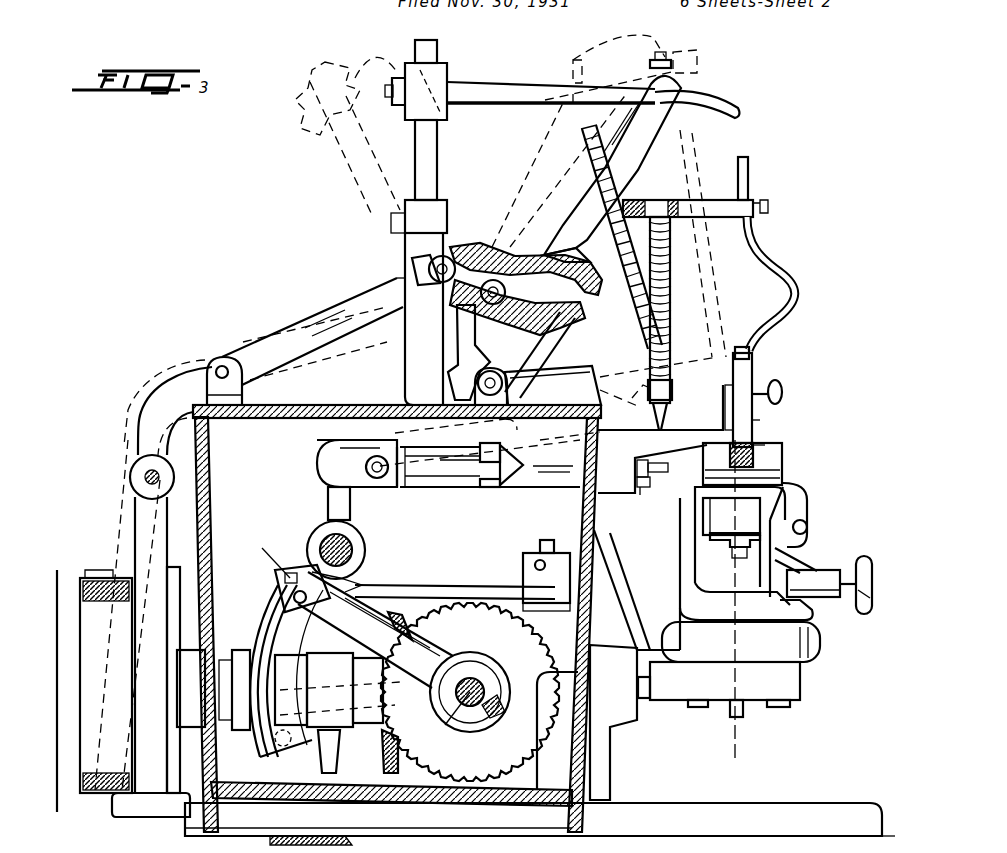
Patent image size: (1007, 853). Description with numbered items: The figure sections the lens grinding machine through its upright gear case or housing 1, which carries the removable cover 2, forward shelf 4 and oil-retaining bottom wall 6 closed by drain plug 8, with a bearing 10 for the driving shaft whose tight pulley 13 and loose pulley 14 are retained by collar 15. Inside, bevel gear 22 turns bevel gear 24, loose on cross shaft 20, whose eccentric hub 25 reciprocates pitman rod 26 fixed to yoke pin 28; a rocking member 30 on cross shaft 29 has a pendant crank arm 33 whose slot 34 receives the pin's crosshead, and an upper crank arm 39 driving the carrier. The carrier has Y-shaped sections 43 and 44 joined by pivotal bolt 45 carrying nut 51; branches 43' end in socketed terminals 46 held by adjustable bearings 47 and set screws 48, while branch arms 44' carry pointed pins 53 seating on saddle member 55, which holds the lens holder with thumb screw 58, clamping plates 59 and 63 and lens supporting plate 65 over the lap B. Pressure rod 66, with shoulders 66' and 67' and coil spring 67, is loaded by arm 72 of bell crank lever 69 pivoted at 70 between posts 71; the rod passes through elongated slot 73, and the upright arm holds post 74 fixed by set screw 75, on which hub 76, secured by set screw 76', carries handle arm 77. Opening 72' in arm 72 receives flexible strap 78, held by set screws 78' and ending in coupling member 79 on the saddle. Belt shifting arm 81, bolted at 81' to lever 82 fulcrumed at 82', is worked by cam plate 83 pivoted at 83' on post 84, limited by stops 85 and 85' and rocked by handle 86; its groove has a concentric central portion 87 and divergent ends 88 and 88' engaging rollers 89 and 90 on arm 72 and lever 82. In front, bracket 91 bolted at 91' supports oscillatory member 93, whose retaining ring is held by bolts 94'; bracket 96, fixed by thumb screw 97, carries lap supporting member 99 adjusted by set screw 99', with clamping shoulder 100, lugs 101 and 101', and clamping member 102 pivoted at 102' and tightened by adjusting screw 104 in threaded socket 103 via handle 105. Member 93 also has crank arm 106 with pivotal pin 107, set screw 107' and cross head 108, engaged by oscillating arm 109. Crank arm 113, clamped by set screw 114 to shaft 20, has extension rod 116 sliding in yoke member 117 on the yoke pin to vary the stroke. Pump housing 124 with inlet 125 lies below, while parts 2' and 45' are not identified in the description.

The gear case or housing 1 is at (197, 523).
The top or cover 2 is at (397, 400).
The lug 2' is at (235, 393).
The shelf 4 is at (780, 812).
The bottom wall 6 is at (515, 806).
The plug 8 is at (550, 695).
The bushing or bearing 10 is at (660, 427).
The tight pulley 13 is at (752, 335).
The loose pulley 14 is at (90, 570).
The collar 15 is at (75, 668).
The cross shaft 20 is at (446, 716).
The bevel gear 22 is at (383, 748).
The bevel gear 24 is at (492, 627).
The hub 25 is at (503, 668).
The pitman rod or bar 26 is at (335, 618).
The yoke pin 28 is at (294, 596).
The cross shaft 29 is at (352, 548).
The rocking member 30 is at (312, 540).
The pendant crank arm 33 is at (283, 618).
The slot 34 is at (265, 640).
The crank arm 39 is at (350, 511).
The Y-shaped section 43 is at (490, 480).
The branches 43' is at (460, 483).
The Y-shaped section 44 is at (652, 469).
The branch arms 44' is at (665, 471).
The pivotal bolt 45 is at (655, 487).
The stop 45' is at (642, 502).
The socketed terminal 46 is at (326, 449).
The adjustable bearing 47 is at (412, 482).
The set screw 48 is at (385, 478).
The nut 51 is at (462, 455).
The pointed pin 53 is at (780, 449).
The saddle member 55 is at (752, 375).
The thumb screw 58 is at (782, 393).
The clamping plate 59 is at (752, 424).
The clamping plate 63 is at (733, 400).
The lens supporting plate 65 is at (766, 460).
The pressure rod 66 is at (670, 323).
The shoulder 66' is at (676, 52).
The coil spring 67 is at (637, 237).
The shoulder 67' is at (633, 391).
The bell crank lever 69 is at (449, 259).
The pivot 70 is at (405, 295).
The upright posts 71 is at (405, 379).
The arm 72 is at (688, 197).
The vertical opening 72' is at (763, 178).
The elongated slot 73 is at (440, 215).
The post 74 is at (437, 151).
The set screw 75 is at (392, 225).
The hub 76 is at (440, 85).
The set screw 76' is at (384, 90).
The handle arm 77 is at (540, 104).
The flexible strap 78 is at (771, 283).
The set screws 78' is at (778, 206).
The coupling member 79 is at (735, 353).
The belt shifting arm 81 is at (162, 592).
The clamping bolt 81' is at (134, 477).
The lever 82 is at (312, 331).
The fulcrum and upright posts 82' is at (220, 368).
The cam plate 83 is at (540, 355).
The pivot 83' is at (498, 371).
The post 84 is at (528, 394).
The stop 85 is at (467, 352).
The stop 85' is at (563, 430).
The handle 86 is at (660, 122).
The central portion of groove 87 is at (535, 258).
The rear end of groove 88 is at (526, 260).
The front end of groove 88' is at (525, 311).
The roller 89 is at (505, 294).
The roller 90 is at (412, 262).
The bracket 91 is at (710, 722).
The bolts 91' is at (672, 682).
The oscillatory member 93 is at (815, 641).
The bolts 94' is at (746, 715).
The bracket 96 is at (685, 600).
The thumb screw 97 is at (740, 726).
The lap supporting member 99 is at (706, 533).
The set screw 99' is at (726, 564).
The clamping shoulder 100 is at (700, 490).
The pendant lug 101 is at (810, 515).
The pendant lug 101' is at (813, 559).
The movable clamping member 102 is at (821, 583).
The pivot 102' is at (824, 528).
The threaded socket 103 is at (828, 598).
The adjusting screw 104 is at (864, 612).
The handle 105 is at (870, 575).
The crank arm 106 is at (620, 566).
The pivotal pin 107 is at (554, 540).
The set screw 107' is at (530, 578).
The cross head 108 is at (546, 614).
The oscillating arm 109 is at (455, 583).
The crank arm 113 is at (409, 622).
The set screw 114 is at (503, 718).
The extension rod 116 is at (352, 578).
The yoke member 117 is at (300, 572).
The pump housing 124 is at (309, 690).
The inlet 125 is at (322, 768).
The lap B is at (782, 476).